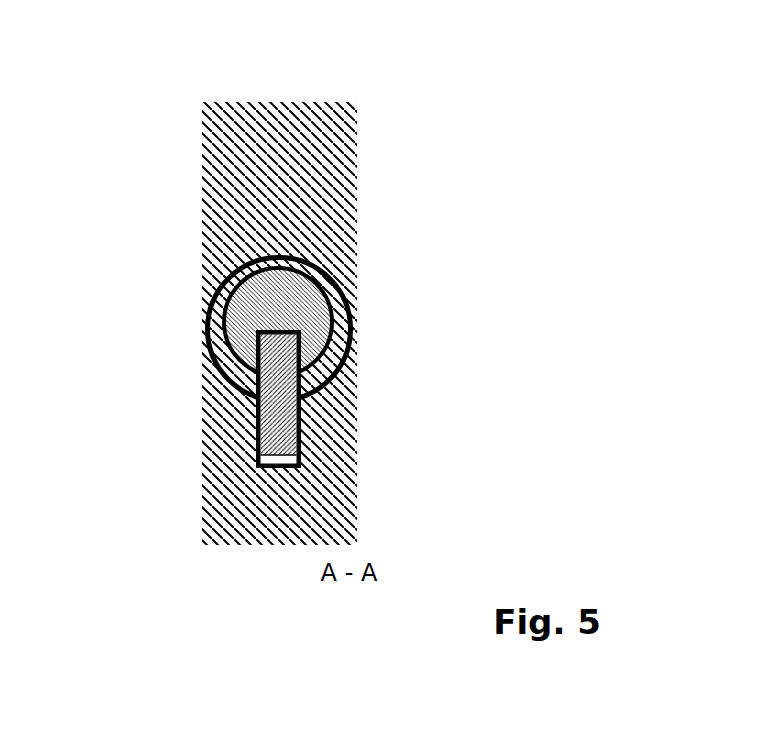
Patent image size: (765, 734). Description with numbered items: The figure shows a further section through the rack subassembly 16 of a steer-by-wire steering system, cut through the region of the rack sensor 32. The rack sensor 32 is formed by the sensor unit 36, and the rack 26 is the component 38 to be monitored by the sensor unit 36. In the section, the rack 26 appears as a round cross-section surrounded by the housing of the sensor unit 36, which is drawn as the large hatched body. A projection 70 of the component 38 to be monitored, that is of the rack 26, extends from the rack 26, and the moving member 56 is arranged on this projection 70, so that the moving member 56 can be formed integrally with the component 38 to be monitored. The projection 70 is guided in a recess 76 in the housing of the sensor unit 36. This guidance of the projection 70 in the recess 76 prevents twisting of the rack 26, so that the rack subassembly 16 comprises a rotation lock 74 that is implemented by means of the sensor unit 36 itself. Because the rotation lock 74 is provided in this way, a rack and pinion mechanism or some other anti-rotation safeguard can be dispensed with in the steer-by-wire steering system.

The rack subassembly 16 is at (117, 114).
The rack sensor 32 is at (319, 72).
The sensor unit 36 is at (220, 78).
The rotation lock 74 is at (370, 398).
The component to be monitored 38 is at (308, 300).
The rack 26 is at (313, 322).
The projection 70 is at (286, 431).
The recess 76 is at (277, 482).
The moving member 56 is at (274, 355).